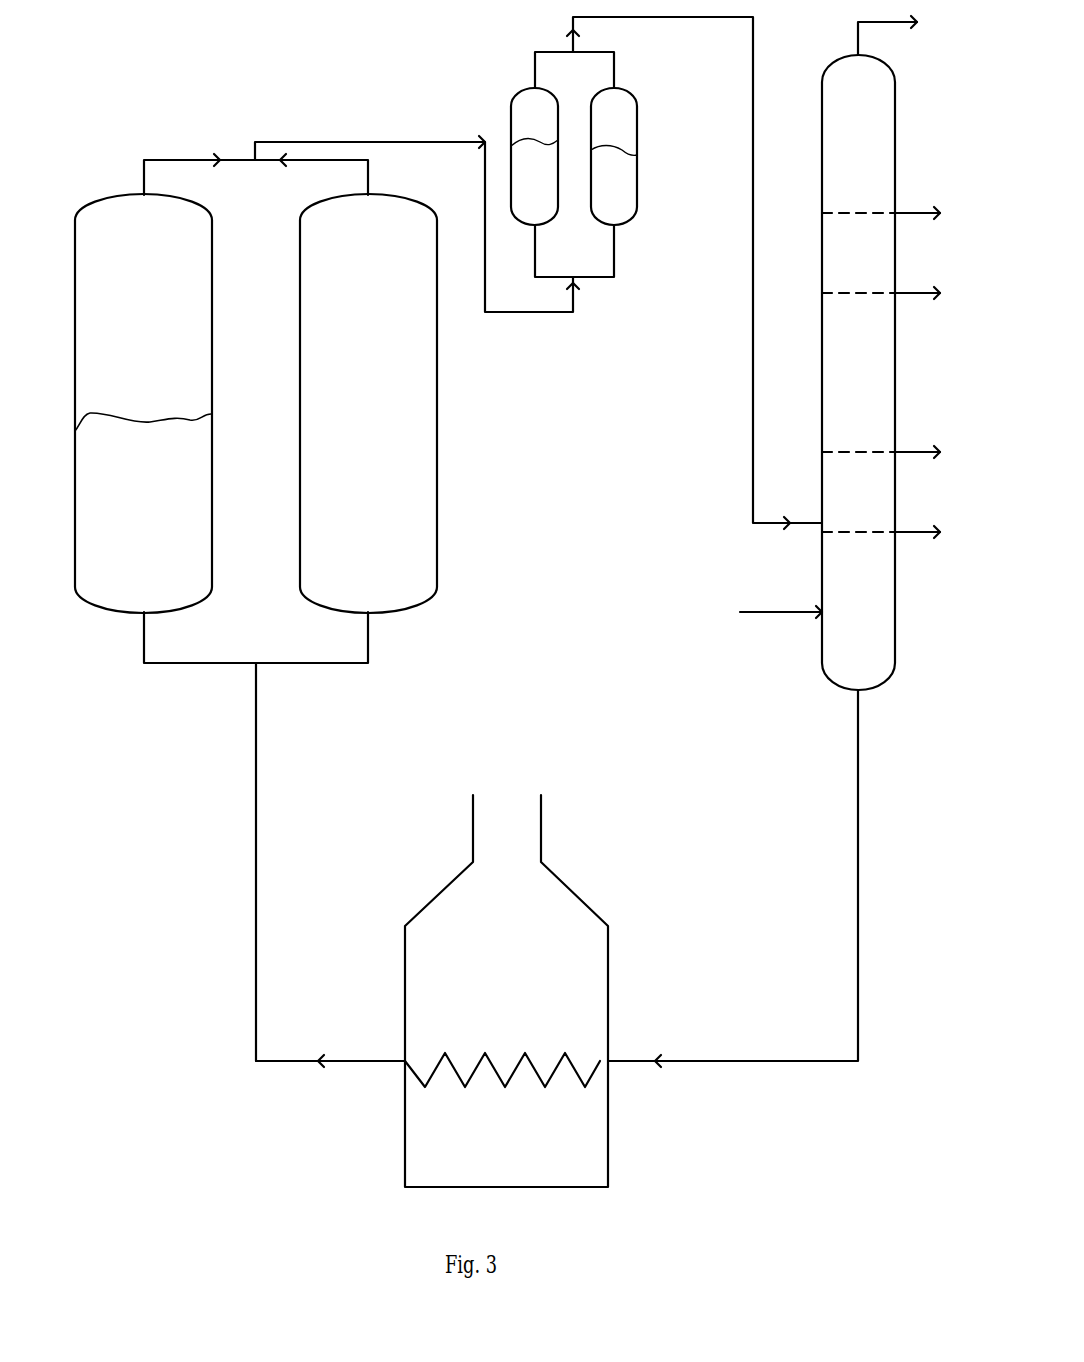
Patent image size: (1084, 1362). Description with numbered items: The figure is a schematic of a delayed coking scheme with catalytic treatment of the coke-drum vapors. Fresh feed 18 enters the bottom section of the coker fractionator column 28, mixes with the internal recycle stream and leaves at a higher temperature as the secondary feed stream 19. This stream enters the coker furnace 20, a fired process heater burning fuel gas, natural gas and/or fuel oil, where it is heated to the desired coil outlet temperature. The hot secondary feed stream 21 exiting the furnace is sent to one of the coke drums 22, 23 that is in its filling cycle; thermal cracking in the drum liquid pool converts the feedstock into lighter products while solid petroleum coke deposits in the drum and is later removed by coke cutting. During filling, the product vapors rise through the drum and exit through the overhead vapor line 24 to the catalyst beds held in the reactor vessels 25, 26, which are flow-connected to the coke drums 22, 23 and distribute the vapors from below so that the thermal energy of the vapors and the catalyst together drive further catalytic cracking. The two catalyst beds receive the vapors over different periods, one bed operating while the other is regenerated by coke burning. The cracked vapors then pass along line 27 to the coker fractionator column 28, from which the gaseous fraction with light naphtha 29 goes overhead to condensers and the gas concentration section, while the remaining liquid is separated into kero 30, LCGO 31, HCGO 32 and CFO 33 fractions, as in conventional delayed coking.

The fresh feed 18 is at (757, 605).
The secondary feed stream 19 is at (861, 776).
The coker furnace 20 is at (448, 880).
The hot secondary feed stream 21 is at (350, 1064).
The coke drum 22 is at (75, 426).
The coke drum 23 is at (300, 397).
The overhead vapor line 24 is at (318, 142).
The reactor vessel 25 is at (522, 156).
The reactor vessel 26 is at (629, 156).
The cracked-vapors line 27 is at (694, 273).
The coker fractionator column 28 is at (822, 122).
The gaseous fraction along with light naphtha 29 is at (900, 32).
The kero fraction 30 is at (930, 213).
The LCGO fraction 31 is at (930, 293).
The HCGO fraction 32 is at (930, 452).
The CFO fraction 33 is at (930, 532).